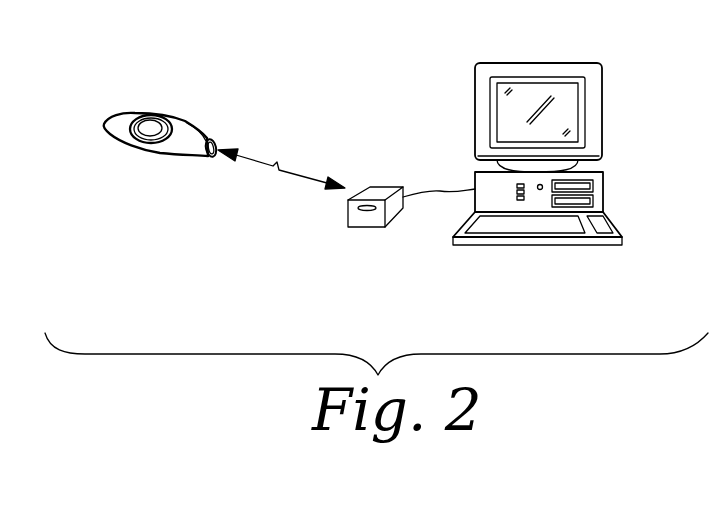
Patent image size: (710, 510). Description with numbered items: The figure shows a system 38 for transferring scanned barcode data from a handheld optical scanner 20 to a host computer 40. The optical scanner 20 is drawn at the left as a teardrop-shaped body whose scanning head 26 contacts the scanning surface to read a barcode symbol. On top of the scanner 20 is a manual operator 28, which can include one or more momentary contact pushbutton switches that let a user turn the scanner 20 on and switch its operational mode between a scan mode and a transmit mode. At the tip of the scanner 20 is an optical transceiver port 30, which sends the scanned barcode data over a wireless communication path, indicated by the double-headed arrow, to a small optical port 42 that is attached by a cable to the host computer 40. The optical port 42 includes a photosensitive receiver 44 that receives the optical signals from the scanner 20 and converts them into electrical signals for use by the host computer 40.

The optical scanner 20 is at (163, 155).
The scanning head 26 is at (104, 124).
The manual operator 28 is at (149, 126).
The optical transceiver port 30 is at (219, 143).
The system 38 is at (280, 244).
The host computer 40 is at (634, 250).
The optical port 42 is at (362, 228).
The photosensitive receiver 44 is at (363, 200).